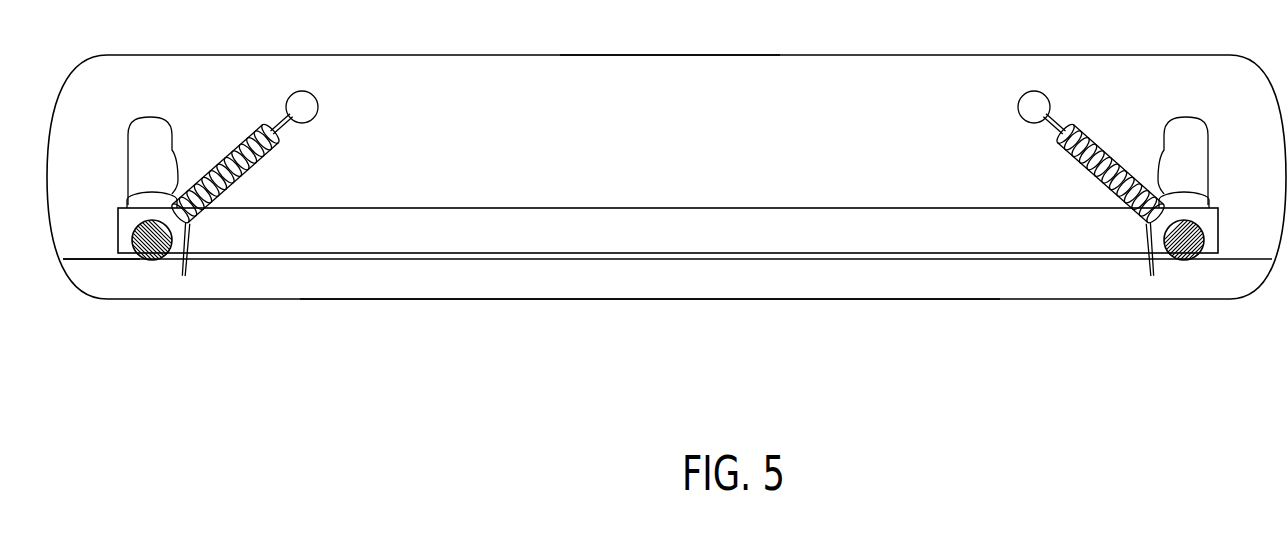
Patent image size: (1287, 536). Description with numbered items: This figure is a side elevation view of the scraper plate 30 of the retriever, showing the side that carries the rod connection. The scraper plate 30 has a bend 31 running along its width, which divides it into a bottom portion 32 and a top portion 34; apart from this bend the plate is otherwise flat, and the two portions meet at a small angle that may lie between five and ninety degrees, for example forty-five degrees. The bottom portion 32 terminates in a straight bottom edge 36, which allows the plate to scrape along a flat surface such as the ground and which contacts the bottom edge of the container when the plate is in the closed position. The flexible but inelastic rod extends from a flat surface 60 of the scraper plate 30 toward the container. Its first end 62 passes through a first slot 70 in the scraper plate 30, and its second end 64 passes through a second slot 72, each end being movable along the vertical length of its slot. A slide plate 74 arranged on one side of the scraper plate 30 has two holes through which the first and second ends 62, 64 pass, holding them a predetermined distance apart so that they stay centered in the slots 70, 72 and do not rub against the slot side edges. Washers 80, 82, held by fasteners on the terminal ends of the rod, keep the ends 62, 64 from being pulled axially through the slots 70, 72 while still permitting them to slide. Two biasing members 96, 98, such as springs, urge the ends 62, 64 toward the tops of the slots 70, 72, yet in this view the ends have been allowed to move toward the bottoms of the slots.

The scraper plate 30 is at (668, 55).
The bend 31 is at (100, 262).
The bottom portion 32 is at (704, 282).
The top portion 34 is at (793, 80).
The bottom edge 36 is at (575, 300).
The flat surface 60 is at (513, 102).
The first end 62 is at (1195, 238).
The second end 64 is at (133, 242).
The first slot 70 is at (1190, 147).
The second slot 72 is at (145, 140).
The slide plate 74 is at (650, 222).
The washer 80 is at (1188, 197).
The washer 82 is at (138, 200).
The biasing member 96 is at (1077, 178).
The biasing member 98 is at (270, 172).